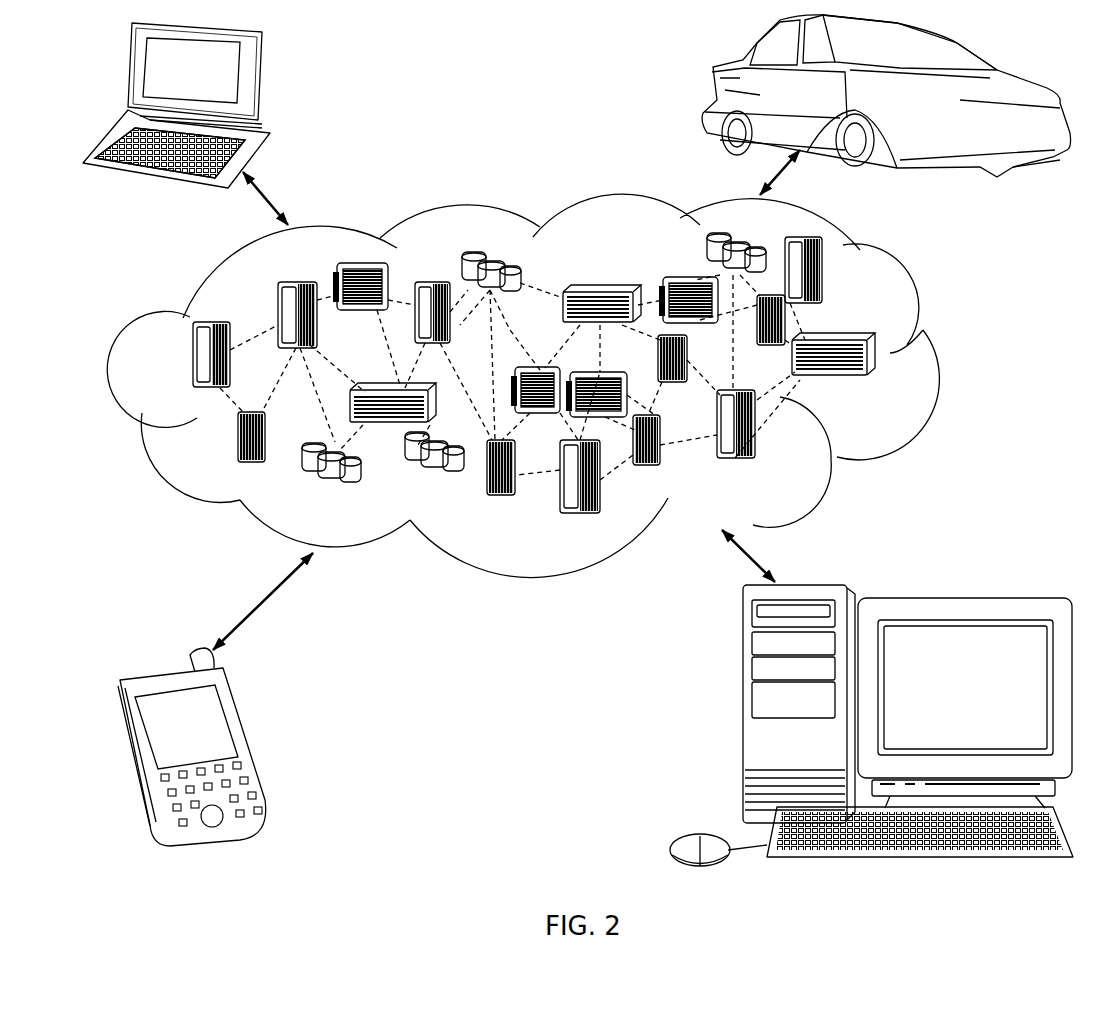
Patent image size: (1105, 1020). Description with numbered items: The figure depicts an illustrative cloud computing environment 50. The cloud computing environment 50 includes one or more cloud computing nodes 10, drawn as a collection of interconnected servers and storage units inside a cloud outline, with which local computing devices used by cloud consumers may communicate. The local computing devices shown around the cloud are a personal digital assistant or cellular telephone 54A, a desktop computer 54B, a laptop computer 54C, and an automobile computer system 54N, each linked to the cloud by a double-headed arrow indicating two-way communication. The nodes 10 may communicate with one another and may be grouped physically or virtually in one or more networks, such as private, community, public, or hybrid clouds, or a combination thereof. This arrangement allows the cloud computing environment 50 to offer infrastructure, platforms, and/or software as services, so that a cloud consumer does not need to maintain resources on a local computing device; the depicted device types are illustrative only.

The cloud computing node 10 is at (918, 390).
The cloud computing environment 50 is at (923, 313).
The personal digital assistant or cellular telephone 54A is at (252, 737).
The desktop computer 54B is at (740, 716).
The laptop computer 54C is at (263, 77).
The automobile computer system 54N is at (702, 86).